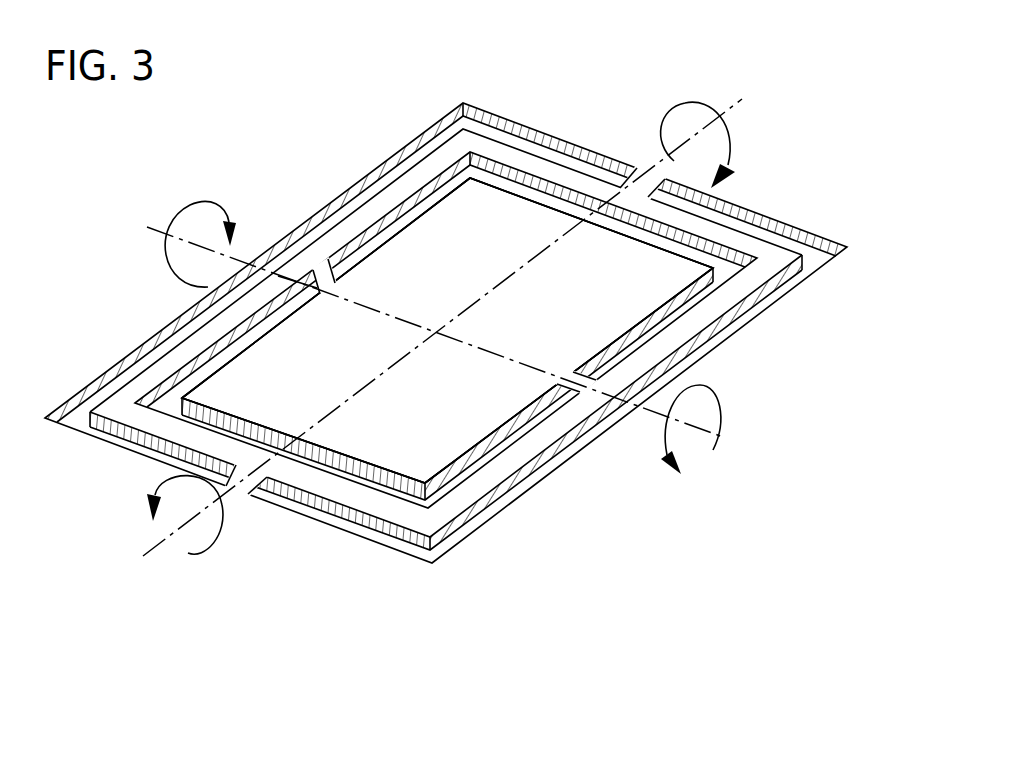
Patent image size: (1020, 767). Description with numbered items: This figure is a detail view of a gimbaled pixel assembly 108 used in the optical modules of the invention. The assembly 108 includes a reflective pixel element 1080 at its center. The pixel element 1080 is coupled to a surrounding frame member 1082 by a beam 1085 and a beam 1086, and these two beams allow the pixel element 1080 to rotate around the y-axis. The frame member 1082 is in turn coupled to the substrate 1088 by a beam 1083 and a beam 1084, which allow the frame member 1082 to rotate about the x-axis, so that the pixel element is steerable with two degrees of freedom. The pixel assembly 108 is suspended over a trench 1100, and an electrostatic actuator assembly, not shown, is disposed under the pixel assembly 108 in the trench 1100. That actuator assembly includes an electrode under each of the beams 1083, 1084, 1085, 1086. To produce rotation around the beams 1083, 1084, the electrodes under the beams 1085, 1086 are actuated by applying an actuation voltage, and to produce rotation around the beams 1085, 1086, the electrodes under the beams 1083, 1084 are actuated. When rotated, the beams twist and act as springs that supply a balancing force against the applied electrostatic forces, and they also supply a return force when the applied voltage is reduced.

The gimbaled pixel assembly 108 is at (456, 294).
The reflective pixel element 1080 is at (647, 295).
The frame member 1082 is at (743, 283).
The beam 1083 is at (241, 490).
The beam 1084 is at (645, 170).
The beam 1085 is at (600, 388).
The beam 1086 is at (318, 278).
The substrate 1088 is at (443, 110).
The trench 1100 is at (667, 320).